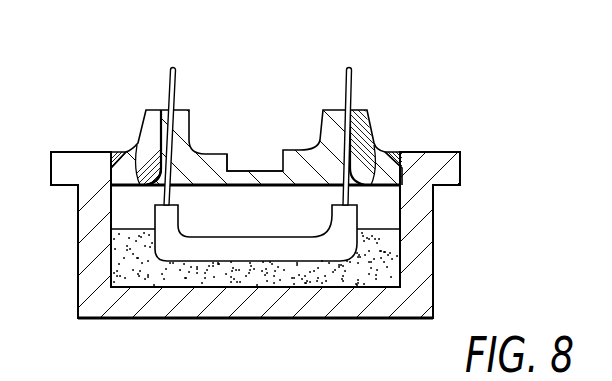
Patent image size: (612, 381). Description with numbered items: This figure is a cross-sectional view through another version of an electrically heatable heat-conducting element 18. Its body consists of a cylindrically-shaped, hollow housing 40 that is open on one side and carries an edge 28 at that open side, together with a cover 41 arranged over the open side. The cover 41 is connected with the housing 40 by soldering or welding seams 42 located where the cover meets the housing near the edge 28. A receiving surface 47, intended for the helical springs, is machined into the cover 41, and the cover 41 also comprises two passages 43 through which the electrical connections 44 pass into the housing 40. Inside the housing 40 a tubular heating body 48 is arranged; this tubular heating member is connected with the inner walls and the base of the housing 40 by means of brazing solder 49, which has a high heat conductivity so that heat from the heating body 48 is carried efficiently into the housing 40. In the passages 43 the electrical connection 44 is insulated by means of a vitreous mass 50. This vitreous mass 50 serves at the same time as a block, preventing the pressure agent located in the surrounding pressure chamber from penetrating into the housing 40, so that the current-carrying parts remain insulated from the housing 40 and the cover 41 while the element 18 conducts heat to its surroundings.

The heat-conducting element 18 is at (472, 216).
The edge 28 is at (60, 172).
The housing 40 is at (353, 303).
The cover 41 is at (297, 157).
The soldering or welding seams 42 is at (110, 157).
The passages 43 is at (152, 128).
The electrical connections 44 is at (176, 80).
The receiving surface 47 is at (242, 170).
The tubular heating body 48 is at (165, 235).
The brazing solder 49 is at (148, 263).
The vitreous mass 50 is at (158, 173).